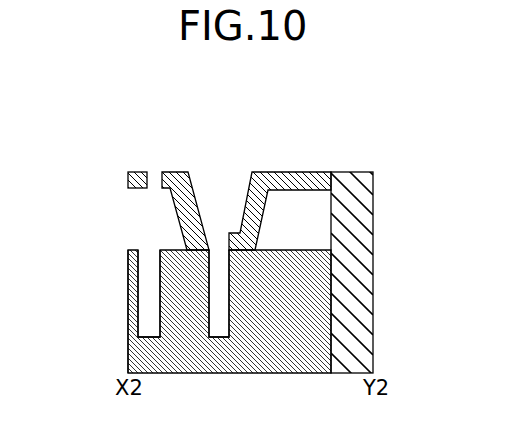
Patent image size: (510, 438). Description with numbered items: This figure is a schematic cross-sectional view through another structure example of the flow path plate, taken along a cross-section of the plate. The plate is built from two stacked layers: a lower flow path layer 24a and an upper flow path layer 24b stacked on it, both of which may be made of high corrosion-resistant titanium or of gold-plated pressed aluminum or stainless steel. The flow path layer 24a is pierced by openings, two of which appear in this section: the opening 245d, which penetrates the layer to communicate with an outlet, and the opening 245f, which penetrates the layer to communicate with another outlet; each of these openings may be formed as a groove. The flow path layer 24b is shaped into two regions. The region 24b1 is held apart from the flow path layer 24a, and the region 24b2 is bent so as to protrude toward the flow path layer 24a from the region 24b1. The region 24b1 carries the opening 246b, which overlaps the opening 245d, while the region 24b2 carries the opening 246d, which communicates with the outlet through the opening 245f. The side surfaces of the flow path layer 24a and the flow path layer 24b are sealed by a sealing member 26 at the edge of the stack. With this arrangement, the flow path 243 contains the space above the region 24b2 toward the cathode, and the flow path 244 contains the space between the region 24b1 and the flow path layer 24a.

The flow path layer 24a is at (295, 366).
The flow path layer 24b is at (225, 219).
The region 24b1 is at (188, 142).
The region 24b2 is at (252, 142).
The flow path 243 is at (233, 179).
The flow path 244 is at (145, 232).
The opening 245d is at (148, 373).
The opening 245f is at (215, 373).
The opening 246b is at (165, 169).
The opening 246d is at (232, 225).
The sealing member 26 is at (350, 363).